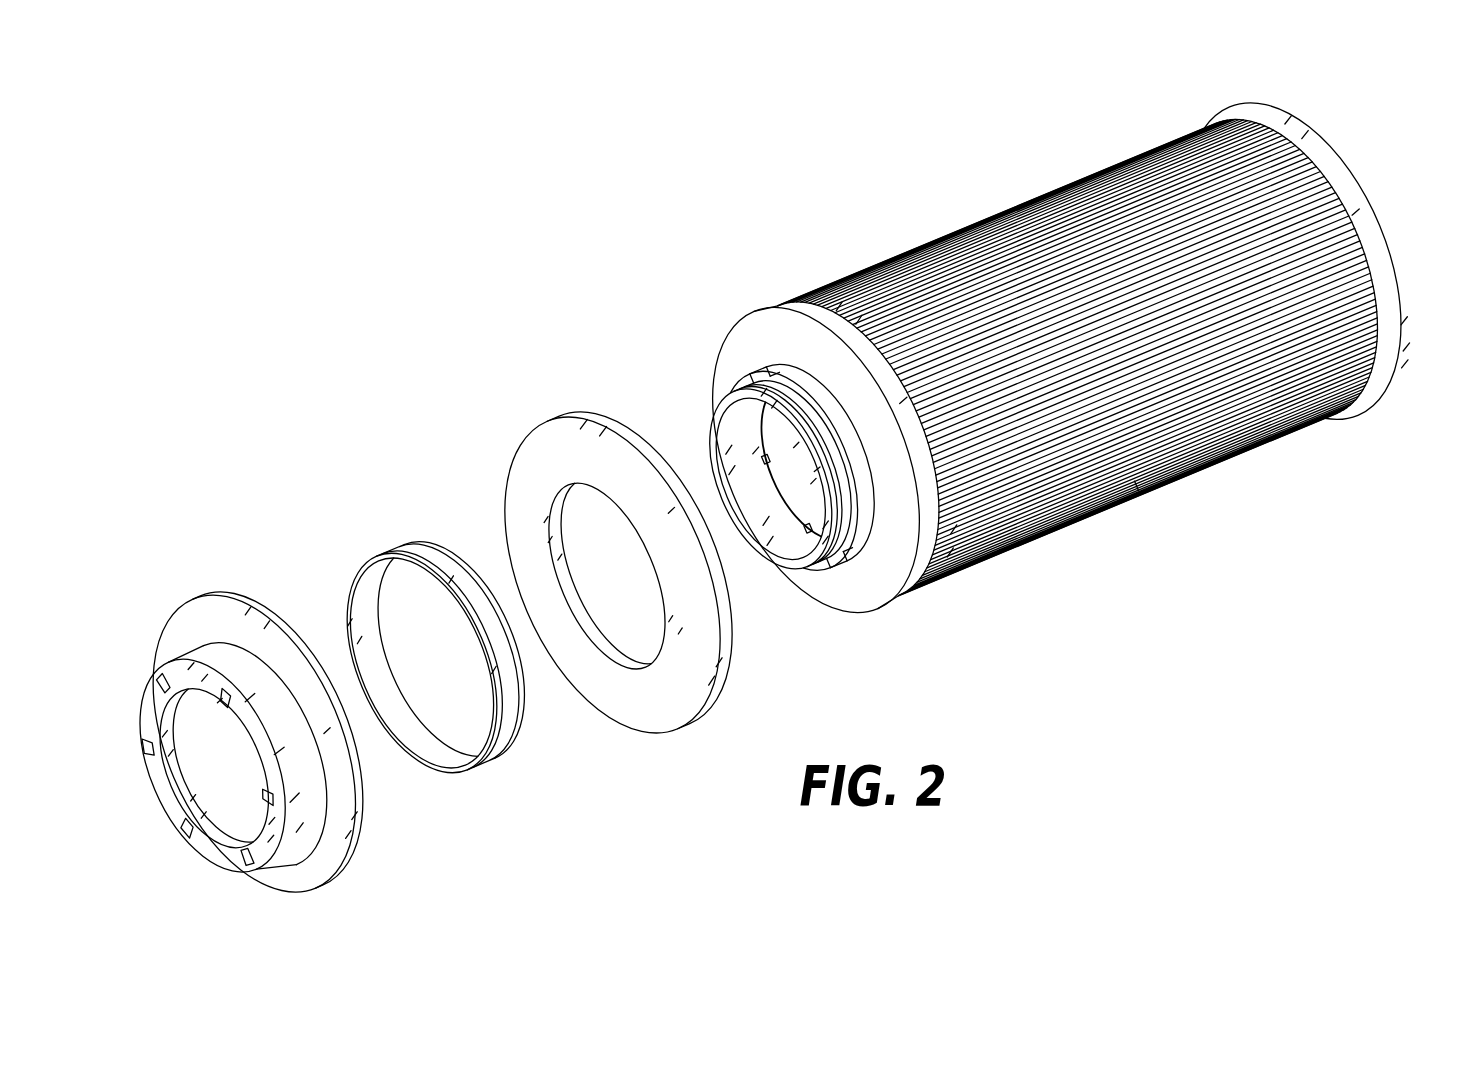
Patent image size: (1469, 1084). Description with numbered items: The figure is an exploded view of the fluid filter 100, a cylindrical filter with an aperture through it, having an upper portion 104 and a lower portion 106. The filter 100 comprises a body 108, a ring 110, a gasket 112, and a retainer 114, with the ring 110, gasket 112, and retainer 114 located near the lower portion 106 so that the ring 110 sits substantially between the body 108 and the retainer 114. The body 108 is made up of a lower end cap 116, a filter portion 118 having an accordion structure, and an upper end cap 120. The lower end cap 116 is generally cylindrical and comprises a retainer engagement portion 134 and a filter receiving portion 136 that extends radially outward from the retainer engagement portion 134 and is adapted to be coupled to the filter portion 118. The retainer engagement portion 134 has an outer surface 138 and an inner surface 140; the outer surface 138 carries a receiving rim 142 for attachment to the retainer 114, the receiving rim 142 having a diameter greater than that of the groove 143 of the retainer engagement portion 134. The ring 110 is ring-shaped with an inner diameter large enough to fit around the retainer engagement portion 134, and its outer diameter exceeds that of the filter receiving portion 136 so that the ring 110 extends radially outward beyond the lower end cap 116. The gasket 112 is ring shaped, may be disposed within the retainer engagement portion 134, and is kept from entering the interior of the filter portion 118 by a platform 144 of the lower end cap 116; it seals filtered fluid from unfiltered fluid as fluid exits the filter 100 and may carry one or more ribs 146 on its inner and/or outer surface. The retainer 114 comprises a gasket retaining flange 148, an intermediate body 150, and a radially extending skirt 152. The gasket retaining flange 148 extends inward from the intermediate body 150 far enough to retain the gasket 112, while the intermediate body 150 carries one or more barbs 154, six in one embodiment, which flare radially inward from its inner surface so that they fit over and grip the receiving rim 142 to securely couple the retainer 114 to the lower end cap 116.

The filter 100 is at (1234, 486).
The upper portion 104 is at (1203, 123).
The lower portion 106 is at (811, 292).
The body 108 is at (1003, 207).
The ring 110 is at (520, 447).
The gasket 112 is at (441, 546).
The retainer 114 is at (230, 592).
The lower end cap 116 is at (935, 583).
The filter portion 118 is at (1142, 483).
The upper end cap 120 is at (1390, 388).
The retainer engagement portion 134 is at (750, 389).
The filter receiving portion 136 is at (902, 601).
The outer surface 138 is at (830, 560).
The inner surface 140 is at (770, 548).
The receiving rim 142 is at (727, 392).
The groove 143 is at (797, 375).
The platform 144 is at (760, 459).
The ribs 146 is at (378, 600).
The gasket retaining flange 148 is at (224, 858).
The intermediate body 150 is at (285, 848).
The radially extending skirt 152 is at (345, 795).
The barbs 154 is at (166, 692).